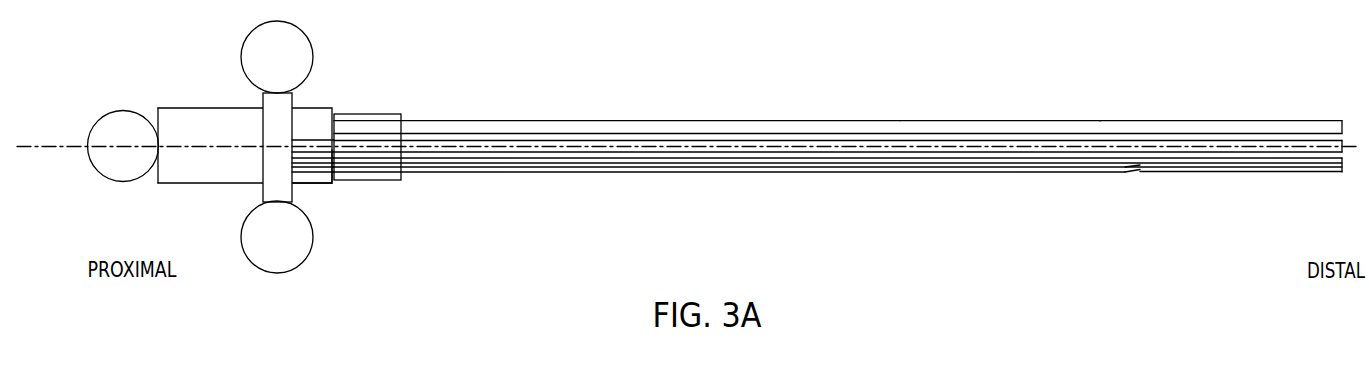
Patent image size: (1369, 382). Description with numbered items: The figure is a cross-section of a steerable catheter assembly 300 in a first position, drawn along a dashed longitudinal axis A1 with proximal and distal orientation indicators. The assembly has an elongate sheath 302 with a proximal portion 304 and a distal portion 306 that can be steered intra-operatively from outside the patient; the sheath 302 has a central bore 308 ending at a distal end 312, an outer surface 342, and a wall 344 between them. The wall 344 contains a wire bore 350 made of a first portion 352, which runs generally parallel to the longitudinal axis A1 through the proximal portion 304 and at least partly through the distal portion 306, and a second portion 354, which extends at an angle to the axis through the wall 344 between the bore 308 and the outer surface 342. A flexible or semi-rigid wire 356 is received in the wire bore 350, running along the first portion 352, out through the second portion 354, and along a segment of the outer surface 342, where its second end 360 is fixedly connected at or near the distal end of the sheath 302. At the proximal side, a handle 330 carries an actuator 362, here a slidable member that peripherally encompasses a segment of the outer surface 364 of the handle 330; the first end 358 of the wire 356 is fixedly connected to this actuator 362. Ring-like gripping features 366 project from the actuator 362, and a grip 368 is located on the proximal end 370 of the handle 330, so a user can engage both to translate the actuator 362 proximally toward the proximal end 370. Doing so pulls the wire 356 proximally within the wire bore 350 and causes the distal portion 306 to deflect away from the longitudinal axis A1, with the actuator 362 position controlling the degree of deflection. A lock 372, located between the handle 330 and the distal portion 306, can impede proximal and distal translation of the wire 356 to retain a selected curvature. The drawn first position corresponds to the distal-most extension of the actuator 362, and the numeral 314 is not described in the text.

The steerable catheter assembly 300 is at (1272, 65).
The sheath 302 is at (632, 118).
The proximal portion 304 is at (472, 120).
The distal portion 306 is at (1150, 121).
The bore 308 is at (820, 131).
The distal end 312 is at (1332, 138).
The lumen 314 is at (735, 137).
The handle 330 is at (230, 106).
The outer surface 342 is at (995, 119).
The wall 344 is at (962, 172).
The wire bore 350 is at (657, 167).
The first portion 352 is at (485, 165).
The second portion 354 is at (1133, 173).
The wire 356 is at (742, 174).
The first end 358 is at (292, 165).
The second end 360 is at (1340, 172).
The actuator 362 is at (263, 126).
The outer surface 364 is at (315, 186).
The gripping features 366 is at (247, 38).
The grip 368 is at (125, 110).
The proximal end 370 is at (158, 110).
The lock 372 is at (365, 114).
The longitudinal axis A1 is at (67, 148).